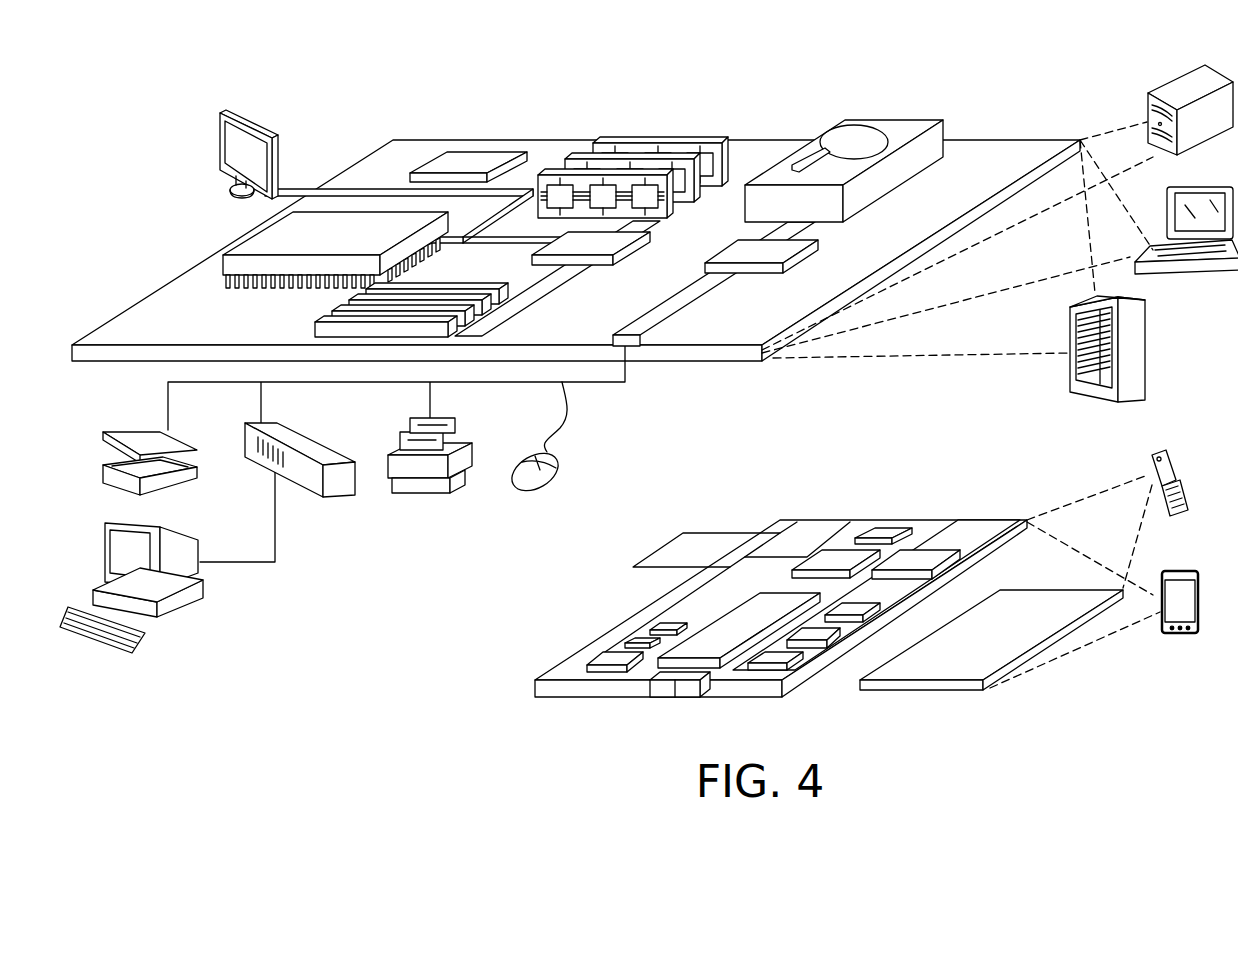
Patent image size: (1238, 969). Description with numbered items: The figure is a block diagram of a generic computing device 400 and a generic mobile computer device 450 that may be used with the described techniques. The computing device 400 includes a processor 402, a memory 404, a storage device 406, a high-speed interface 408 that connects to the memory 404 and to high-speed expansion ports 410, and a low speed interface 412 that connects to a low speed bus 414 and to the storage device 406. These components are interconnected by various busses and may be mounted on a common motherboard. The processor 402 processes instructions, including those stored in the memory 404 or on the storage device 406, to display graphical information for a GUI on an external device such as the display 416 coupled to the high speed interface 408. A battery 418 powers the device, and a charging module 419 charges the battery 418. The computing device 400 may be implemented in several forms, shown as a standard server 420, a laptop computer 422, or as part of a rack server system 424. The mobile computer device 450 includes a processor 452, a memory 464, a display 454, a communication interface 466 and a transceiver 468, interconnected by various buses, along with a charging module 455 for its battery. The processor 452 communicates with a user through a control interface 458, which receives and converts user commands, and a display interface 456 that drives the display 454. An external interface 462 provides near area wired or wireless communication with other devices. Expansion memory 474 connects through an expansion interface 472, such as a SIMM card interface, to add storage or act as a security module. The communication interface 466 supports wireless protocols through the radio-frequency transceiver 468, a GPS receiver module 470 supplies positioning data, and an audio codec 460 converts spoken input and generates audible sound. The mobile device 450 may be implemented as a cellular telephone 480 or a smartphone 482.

The computing device 400 is at (343, 92).
The processor 402 is at (246, 240).
The memory 404 is at (667, 136).
The storage device 406 is at (886, 118).
The high-speed interface 408 is at (604, 244).
The high-speed expansion ports 410 is at (341, 316).
The low speed interface 412 is at (738, 250).
The low speed bus 414 is at (630, 333).
The display 416 is at (229, 114).
The battery 418 is at (437, 173).
The charging module 419 is at (468, 157).
The standard server 420 is at (1169, 93).
The laptop computer 422 is at (1213, 187).
The rack server system 424 is at (1146, 352).
The mobile computer device 450 is at (1052, 693).
The processor 452 is at (712, 633).
The display 454 is at (601, 654).
The charging module 455 is at (598, 669).
The display interface 456 is at (784, 658).
The control interface 458 is at (821, 634).
The audio codec 460 is at (861, 600).
The external interface 462 is at (675, 688).
The memory 464 is at (629, 639).
The communication interface 466 is at (836, 553).
The transceiver 468 is at (918, 552).
The GPS receiver module 470 is at (879, 530).
The expansion interface 472 is at (765, 533).
The expansion memory 474 is at (687, 533).
The cellular telephone 480 is at (1160, 452).
The smartphone 482 is at (1175, 571).